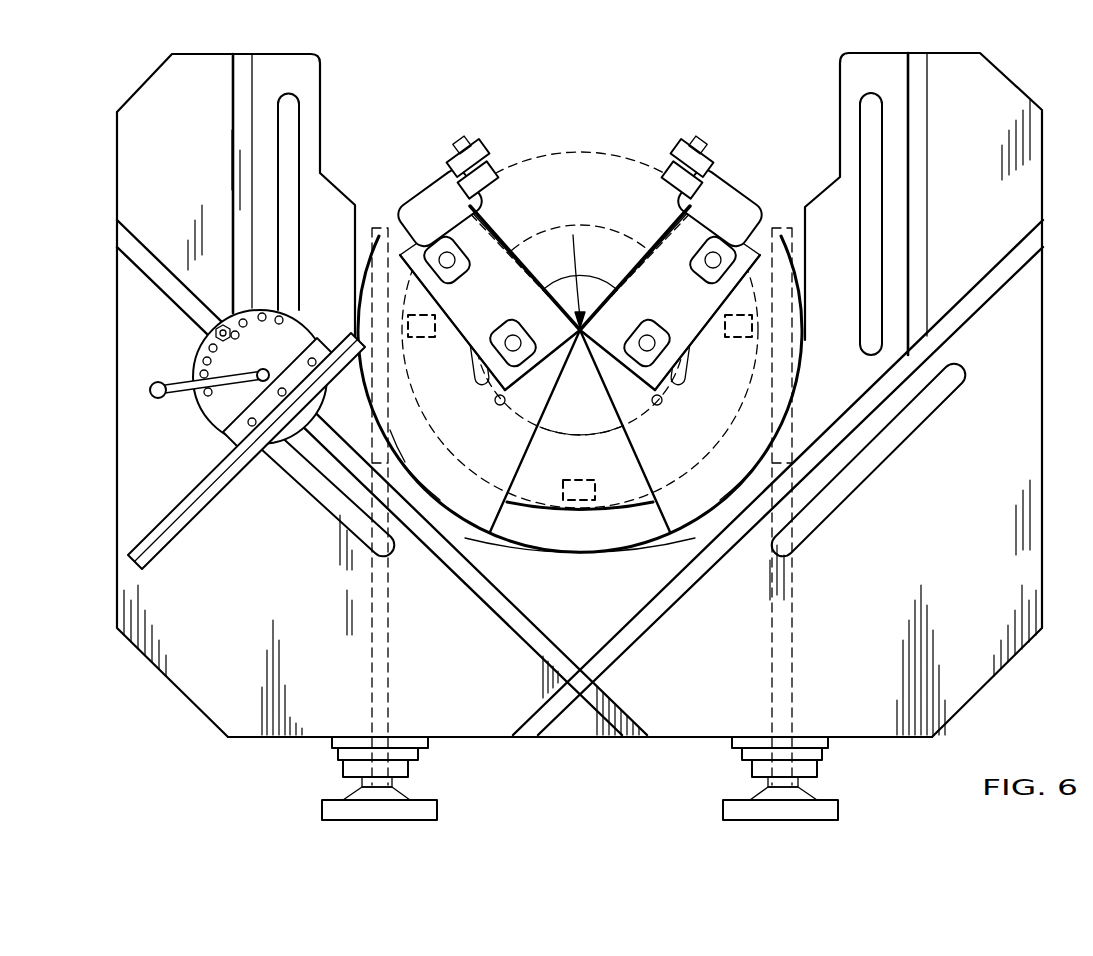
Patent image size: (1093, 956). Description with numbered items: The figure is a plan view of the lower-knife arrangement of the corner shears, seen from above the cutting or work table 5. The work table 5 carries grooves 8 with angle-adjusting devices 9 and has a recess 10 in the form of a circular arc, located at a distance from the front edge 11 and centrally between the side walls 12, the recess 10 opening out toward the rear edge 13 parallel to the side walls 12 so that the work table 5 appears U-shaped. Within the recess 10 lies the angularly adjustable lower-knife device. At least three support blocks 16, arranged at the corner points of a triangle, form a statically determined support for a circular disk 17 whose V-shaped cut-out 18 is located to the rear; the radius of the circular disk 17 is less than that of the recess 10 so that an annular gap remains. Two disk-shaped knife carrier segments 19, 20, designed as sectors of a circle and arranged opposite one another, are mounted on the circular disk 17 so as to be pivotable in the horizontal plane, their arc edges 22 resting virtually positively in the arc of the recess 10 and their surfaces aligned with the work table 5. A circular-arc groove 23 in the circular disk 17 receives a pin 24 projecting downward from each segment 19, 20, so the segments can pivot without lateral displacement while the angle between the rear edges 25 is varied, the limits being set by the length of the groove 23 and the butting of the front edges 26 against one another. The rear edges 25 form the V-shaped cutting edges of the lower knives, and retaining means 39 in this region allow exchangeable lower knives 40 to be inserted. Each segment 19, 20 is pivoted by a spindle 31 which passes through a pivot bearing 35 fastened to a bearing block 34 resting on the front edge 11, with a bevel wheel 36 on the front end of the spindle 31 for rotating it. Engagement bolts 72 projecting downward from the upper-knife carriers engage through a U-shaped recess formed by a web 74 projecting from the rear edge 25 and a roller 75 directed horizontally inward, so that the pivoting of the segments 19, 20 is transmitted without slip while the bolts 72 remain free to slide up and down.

The work table 5 is at (1042, 442).
The grooves 8 is at (900, 432).
The angle-adjusting devices 9 is at (200, 343).
The recess 10 is at (618, 548).
The front edge 11 is at (662, 738).
The side walls 12 is at (117, 180).
The rear edge 13 is at (305, 58).
The support blocks 16 is at (408, 325).
The circular disk 17 is at (548, 505).
The V-shaped cut-out 18 is at (598, 282).
The knife carrier segment 19 is at (475, 535).
The knife carrier segment 20 is at (702, 508).
The arc edges 22 is at (428, 498).
The groove 23 is at (550, 432).
The pin 24 is at (495, 405).
The rear edges 25 is at (528, 275).
The front edges 26 is at (560, 372).
The spindle 31 is at (372, 655).
The bearing block 34 is at (322, 756).
The pivot bearing 35 is at (343, 770).
The bevel wheel 36 is at (437, 808).
The retaining means 39 is at (418, 222).
The exchangeable lower knives 40 is at (445, 198).
The engagement bolts 72 is at (462, 155).
The web 74 is at (470, 143).
The roller 75 is at (494, 178).